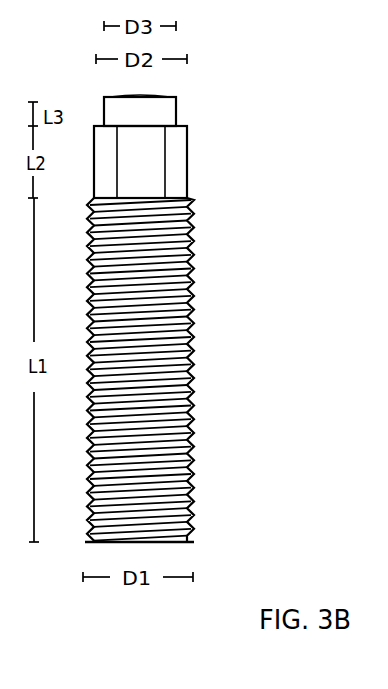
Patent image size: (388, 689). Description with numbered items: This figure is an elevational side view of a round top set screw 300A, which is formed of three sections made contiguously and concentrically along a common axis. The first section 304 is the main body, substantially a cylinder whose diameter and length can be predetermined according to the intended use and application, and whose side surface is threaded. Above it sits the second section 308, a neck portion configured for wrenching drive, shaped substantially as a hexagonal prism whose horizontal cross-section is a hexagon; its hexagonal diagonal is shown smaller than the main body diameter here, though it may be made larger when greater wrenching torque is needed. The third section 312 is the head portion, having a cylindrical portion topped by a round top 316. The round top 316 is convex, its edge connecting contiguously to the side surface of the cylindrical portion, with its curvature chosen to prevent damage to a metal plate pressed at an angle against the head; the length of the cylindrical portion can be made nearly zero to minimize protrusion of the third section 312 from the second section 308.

The round top set screw 300A is at (206, 312).
The first section 304 is at (167, 437).
The second section 308 is at (172, 162).
The third section 312 is at (163, 105).
The round top 316 is at (150, 95).